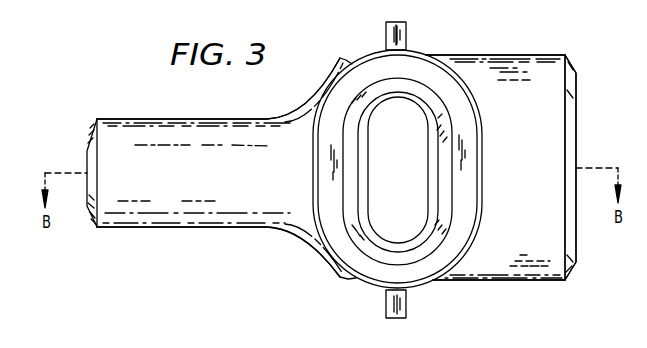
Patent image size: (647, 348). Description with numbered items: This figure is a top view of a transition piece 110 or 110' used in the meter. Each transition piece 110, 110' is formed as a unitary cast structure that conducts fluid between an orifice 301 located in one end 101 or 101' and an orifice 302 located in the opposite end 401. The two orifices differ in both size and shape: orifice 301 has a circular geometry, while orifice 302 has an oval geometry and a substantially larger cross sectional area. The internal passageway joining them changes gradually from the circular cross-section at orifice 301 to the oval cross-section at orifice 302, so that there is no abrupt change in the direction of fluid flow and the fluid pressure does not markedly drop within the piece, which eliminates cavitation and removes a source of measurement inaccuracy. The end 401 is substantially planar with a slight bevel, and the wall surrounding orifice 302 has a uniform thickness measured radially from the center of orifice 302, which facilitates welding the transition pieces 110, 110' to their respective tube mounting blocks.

The end 101 is at (193, 168).
The end 101' is at (185, 167).
The transition piece 110 is at (501, 147).
The transition piece 110' is at (501, 147).
The orifice 301 is at (87, 151).
The orifice 302 is at (404, 222).
The end 401 is at (370, 72).